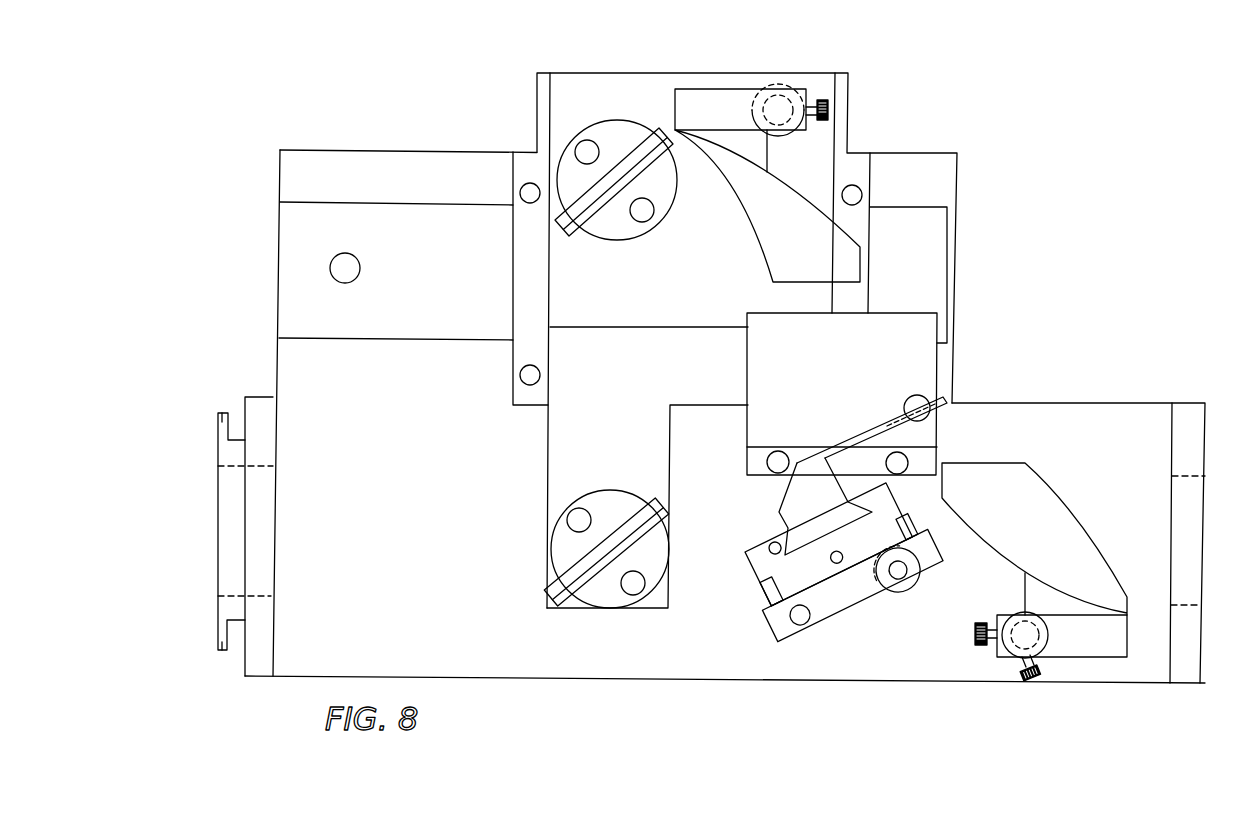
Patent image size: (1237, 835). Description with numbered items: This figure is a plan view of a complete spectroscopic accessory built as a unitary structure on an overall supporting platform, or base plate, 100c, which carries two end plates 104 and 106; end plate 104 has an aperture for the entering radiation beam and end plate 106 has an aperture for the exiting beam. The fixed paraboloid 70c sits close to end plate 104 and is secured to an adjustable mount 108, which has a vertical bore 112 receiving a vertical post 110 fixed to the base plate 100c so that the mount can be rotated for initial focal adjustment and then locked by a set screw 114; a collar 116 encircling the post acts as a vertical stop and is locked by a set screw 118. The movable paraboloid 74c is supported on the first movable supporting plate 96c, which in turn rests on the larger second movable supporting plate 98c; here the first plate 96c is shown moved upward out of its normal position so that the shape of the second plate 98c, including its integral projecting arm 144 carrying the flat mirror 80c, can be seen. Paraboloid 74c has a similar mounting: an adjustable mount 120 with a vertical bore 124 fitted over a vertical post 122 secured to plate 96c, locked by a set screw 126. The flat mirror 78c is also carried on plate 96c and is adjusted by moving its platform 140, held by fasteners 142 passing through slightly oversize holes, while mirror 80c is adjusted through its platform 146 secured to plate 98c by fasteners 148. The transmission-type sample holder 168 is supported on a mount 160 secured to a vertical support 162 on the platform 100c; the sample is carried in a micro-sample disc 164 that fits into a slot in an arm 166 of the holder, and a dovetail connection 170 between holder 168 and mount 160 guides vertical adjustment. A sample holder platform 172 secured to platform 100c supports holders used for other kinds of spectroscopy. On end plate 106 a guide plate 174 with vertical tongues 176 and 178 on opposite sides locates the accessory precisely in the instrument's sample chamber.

The fixed paraboloid 70c is at (979, 534).
The movable paraboloid 74c is at (815, 182).
The flat mirror 78c is at (642, 150).
The flat mirror 80c is at (666, 504).
The first movable supporting plate 96c is at (643, 91).
The second movable supporting plate 98c is at (617, 403).
The base plate 100c is at (552, 658).
The end plate 104 is at (1212, 421).
The end plate 106 is at (262, 395).
The adjustable mount 108 is at (1100, 640).
The vertical post 110 is at (1020, 630).
The vertical bore 112 is at (1036, 643).
The set screw 114 is at (975, 633).
The collar 116 is at (1017, 656).
The set screw 118 is at (1025, 679).
The adjustable mount 120 is at (720, 96).
The vertical post 122 is at (789, 103).
The vertical bore 124 is at (780, 90).
The set screw 126 is at (829, 111).
The platform 140 is at (612, 222).
The fasteners 142 is at (584, 146).
The projecting arm 144 is at (562, 482).
The platform 146 is at (647, 550).
The fasteners 148 is at (570, 507).
The mount 160 is at (792, 575).
The vertical support 162 is at (845, 596).
The micro-sample disc 164 is at (945, 398).
The arm 166 is at (875, 418).
The sample holder 168 is at (802, 505).
The dovetail connection 170 is at (852, 501).
The sample holder platform 172 is at (912, 343).
The guide plate 174 is at (225, 454).
The vertical tongue 176 is at (222, 411).
The vertical tongue 178 is at (222, 651).